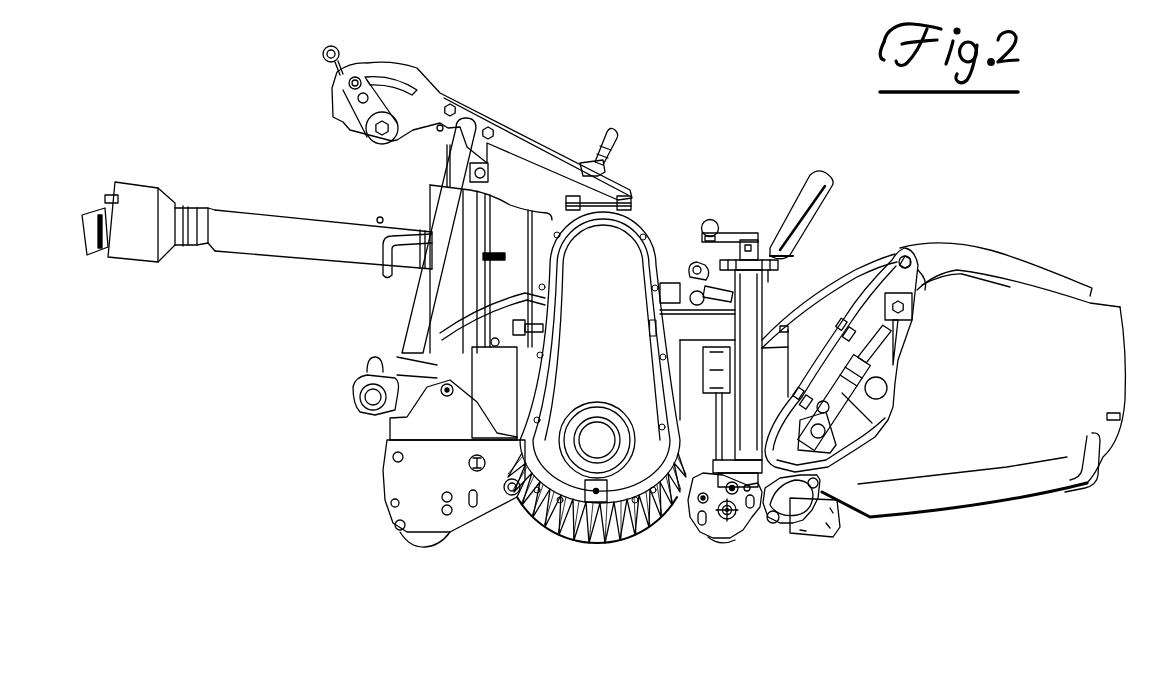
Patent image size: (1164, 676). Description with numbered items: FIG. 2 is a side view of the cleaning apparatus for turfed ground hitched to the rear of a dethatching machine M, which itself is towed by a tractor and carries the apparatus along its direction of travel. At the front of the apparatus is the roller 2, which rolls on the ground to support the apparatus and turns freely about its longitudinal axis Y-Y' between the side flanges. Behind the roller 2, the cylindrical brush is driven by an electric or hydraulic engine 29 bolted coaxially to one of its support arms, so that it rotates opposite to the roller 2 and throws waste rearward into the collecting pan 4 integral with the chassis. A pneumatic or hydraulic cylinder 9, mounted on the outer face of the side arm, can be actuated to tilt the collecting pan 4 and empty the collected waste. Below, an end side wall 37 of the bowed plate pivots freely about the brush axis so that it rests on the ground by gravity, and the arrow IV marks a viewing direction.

The machine M is at (576, 121).
The front roller 2 is at (722, 528).
The collecting pan 4 is at (973, 380).
The cylinder 9 is at (873, 425).
The engine 29 is at (790, 500).
The end side wall 37 is at (837, 532).
The longitudinal axis Y-Y' Y is at (717, 540).
The view IV is at (803, 576).